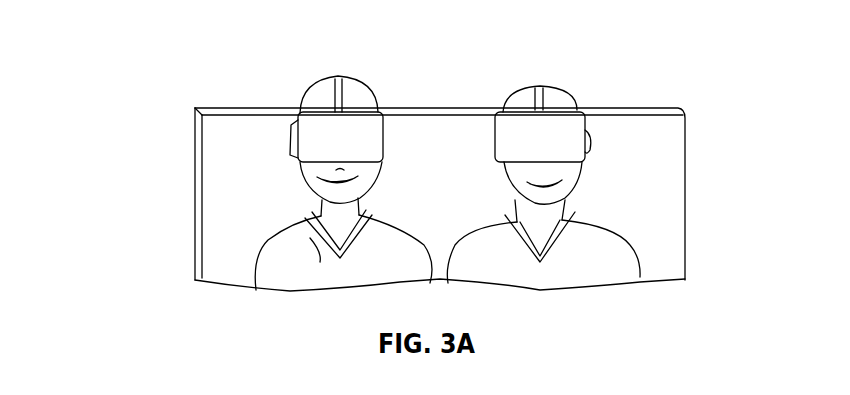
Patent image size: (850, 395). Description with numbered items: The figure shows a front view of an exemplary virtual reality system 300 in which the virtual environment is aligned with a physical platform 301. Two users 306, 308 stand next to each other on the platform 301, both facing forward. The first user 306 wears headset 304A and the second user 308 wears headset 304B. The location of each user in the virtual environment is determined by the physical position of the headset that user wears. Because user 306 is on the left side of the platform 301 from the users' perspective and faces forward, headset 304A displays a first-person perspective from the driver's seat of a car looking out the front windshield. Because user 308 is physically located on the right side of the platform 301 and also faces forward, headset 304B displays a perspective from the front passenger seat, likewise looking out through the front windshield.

The virtual reality system 300 is at (263, 40).
The platform 301 is at (652, 133).
The headset 304A is at (577, 117).
The headset 304B is at (380, 108).
The user 306 is at (610, 232).
The user 308 is at (275, 238).